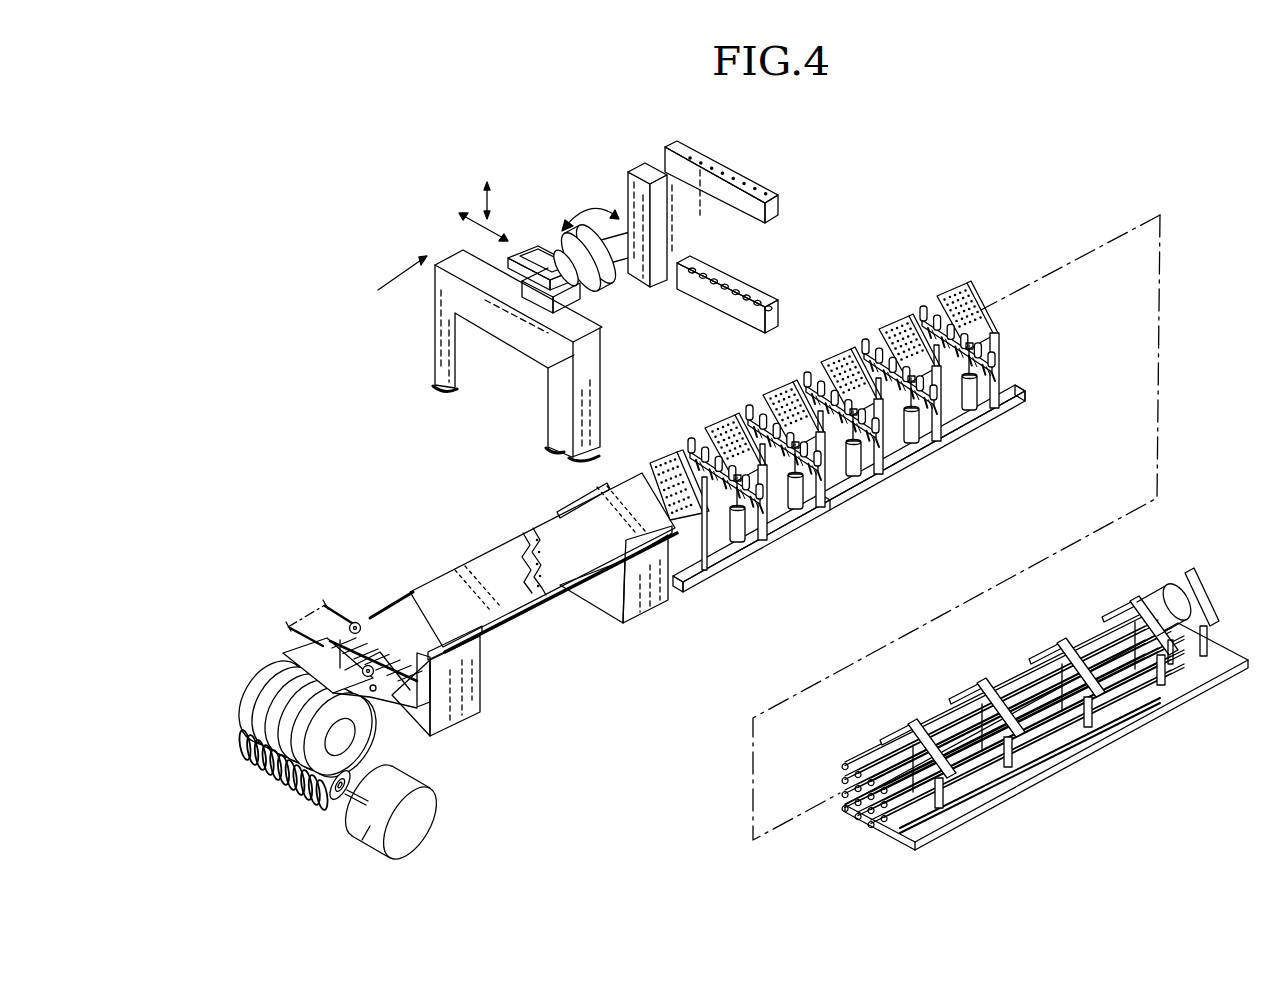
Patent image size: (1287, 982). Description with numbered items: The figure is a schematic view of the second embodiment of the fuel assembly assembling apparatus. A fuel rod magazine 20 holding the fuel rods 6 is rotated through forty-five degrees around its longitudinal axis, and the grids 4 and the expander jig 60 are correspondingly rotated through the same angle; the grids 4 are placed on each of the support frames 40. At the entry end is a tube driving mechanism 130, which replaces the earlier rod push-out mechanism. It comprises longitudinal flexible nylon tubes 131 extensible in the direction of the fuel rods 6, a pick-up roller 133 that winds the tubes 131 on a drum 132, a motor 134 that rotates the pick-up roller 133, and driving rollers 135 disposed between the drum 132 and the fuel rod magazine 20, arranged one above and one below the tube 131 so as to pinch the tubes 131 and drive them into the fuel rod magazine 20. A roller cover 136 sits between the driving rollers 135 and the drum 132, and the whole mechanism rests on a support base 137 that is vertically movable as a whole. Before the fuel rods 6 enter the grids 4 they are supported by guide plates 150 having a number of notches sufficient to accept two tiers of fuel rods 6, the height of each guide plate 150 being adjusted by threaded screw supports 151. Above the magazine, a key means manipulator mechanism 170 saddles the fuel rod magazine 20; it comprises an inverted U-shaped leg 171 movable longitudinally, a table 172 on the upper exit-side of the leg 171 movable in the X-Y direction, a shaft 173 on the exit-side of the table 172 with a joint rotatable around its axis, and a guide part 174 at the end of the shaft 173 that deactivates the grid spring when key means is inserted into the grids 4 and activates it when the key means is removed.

The grid 4 is at (723, 440).
The fuel rod 6 is at (548, 592).
The fuel rod magazine 20 is at (465, 565).
The support frame 40 is at (887, 453).
The expander jig 60 is at (1085, 635).
The tube driving mechanism 130 is at (273, 580).
The flexible nylon tube 131 is at (397, 692).
The drum 132 is at (252, 688).
The pick-up roller 133 is at (240, 752).
The motor 134 is at (420, 832).
The driving roller 135 is at (355, 623).
The roller cover 136 is at (300, 655).
The support base 137 is at (378, 718).
The guide plate 150 is at (693, 450).
The threaded screw support 151 is at (737, 547).
The key means manipulator mechanism 170 is at (518, 156).
The leg 171 is at (438, 341).
The table 172 is at (527, 249).
The shaft 173 is at (633, 262).
The guide part 174 is at (732, 166).